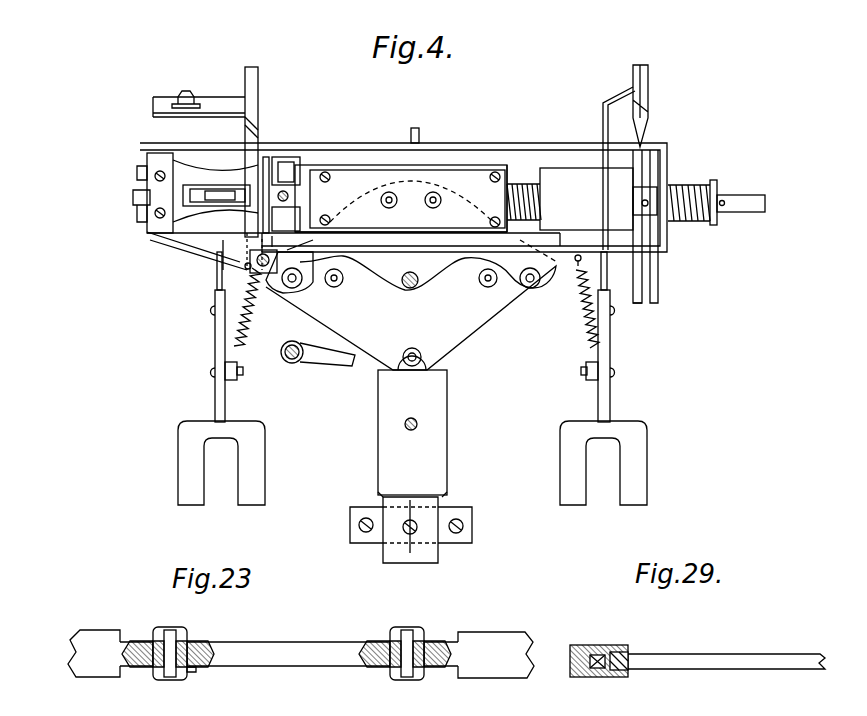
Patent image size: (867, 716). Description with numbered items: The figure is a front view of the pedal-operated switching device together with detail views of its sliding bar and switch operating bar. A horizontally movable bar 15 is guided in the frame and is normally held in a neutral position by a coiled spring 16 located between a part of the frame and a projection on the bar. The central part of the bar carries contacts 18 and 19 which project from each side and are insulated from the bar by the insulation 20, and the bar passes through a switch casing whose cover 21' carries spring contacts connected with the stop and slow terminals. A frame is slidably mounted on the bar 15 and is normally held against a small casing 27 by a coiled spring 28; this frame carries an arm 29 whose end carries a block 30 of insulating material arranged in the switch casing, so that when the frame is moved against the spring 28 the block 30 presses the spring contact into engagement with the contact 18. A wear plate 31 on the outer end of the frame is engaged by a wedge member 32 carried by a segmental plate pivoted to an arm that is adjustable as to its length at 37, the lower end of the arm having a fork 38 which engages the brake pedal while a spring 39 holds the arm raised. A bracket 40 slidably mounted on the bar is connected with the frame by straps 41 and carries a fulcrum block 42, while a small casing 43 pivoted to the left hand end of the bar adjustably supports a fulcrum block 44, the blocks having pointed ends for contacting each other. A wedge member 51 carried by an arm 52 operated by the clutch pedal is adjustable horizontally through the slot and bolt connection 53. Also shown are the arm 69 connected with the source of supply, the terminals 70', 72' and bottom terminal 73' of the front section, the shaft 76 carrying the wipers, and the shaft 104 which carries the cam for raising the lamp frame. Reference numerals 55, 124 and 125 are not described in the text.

In FIG. 4, the horizontally movable bar 15 is at (738, 193).
In FIG. 23, the horizontally movable bar 15 is at (477, 638).
In FIG. 4, the coiled spring 16 is at (688, 182).
In FIG. 23, the contact 18 is at (407, 627).
In FIG. 23, the contact 19 is at (170, 627).
In FIG. 23, the insulation 20 is at (192, 672).
In FIG. 4, the cover 21' is at (426, 195).
In FIG. 4, the small casing 27 is at (650, 195).
In FIG. 4, the coiled spring 28 is at (520, 198).
In FIG. 4, the arm 29 is at (586, 199).
In FIG. 29, the arm 29 is at (695, 668).
In FIG. 4, the block 30 is at (660, 292).
In FIG. 29, the block 30 is at (585, 645).
In FIG. 4, the wear plate 31 is at (640, 304).
In FIG. 4, the wedge member 32 is at (650, 122).
In FIG. 4, the length adjustment 37 is at (610, 345).
In FIG. 4, the fork 38 is at (645, 478).
In FIG. 4, the spring 39 is at (580, 330).
In FIG. 4, the bracket 40 is at (288, 190).
In FIG. 4, the straps 41 is at (505, 165).
In FIG. 4, the fulcrum block 42 is at (225, 190).
In FIG. 4, the small casing 43 is at (232, 203).
In FIG. 4, the fulcrum block 44 is at (235, 203).
In FIG. 4, the wedge member 51 is at (258, 85).
In FIG. 4, the arm 52 is at (213, 340).
In FIG. 4, the slot and bolt connection 53 is at (186, 92).
In FIG. 4, the bar 55 is at (648, 105).
In FIG. 4, the arm 69 is at (320, 362).
In FIG. 4, the terminal 70' is at (486, 295).
In FIG. 4, the terminal 72' is at (330, 295).
In FIG. 4, the bottom terminal 73' is at (411, 321).
In FIG. 4, the shaft 76 is at (412, 288).
In FIG. 4, the shaft 104 is at (417, 424).
In FIG. 4, the hole 124 is at (387, 193).
In FIG. 4, the hole 125 is at (433, 192).